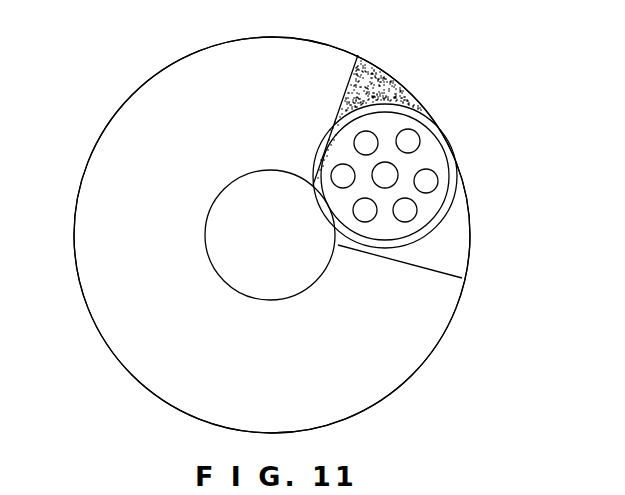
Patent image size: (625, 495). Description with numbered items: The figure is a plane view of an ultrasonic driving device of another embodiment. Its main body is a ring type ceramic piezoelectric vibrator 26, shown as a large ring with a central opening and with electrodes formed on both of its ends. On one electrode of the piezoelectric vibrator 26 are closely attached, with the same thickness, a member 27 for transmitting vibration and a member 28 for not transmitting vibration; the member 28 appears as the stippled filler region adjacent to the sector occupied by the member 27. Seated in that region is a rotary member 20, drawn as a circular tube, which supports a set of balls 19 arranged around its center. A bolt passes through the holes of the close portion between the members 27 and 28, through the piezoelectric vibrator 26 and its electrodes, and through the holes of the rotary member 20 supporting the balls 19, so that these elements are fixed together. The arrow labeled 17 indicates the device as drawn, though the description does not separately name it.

The cable 17 is at (445, 333).
The balls 19 is at (413, 208).
The rotary member 20 is at (447, 140).
The piezoelectric vibrator 26 is at (107, 315).
The member for transmitting vibration 27 is at (453, 245).
The member for not transmitting vibration 28 is at (387, 84).